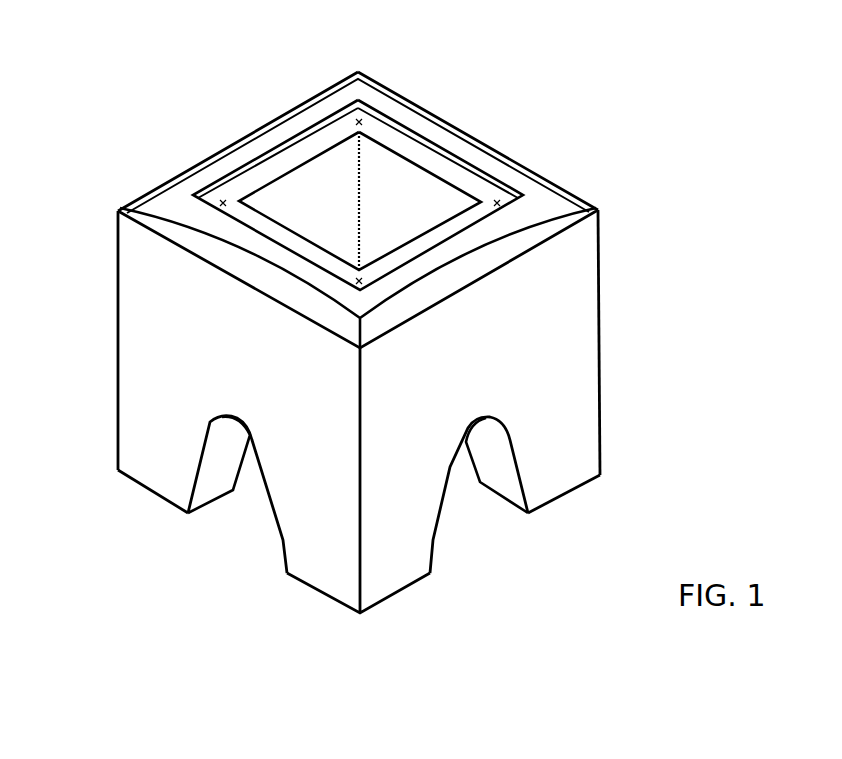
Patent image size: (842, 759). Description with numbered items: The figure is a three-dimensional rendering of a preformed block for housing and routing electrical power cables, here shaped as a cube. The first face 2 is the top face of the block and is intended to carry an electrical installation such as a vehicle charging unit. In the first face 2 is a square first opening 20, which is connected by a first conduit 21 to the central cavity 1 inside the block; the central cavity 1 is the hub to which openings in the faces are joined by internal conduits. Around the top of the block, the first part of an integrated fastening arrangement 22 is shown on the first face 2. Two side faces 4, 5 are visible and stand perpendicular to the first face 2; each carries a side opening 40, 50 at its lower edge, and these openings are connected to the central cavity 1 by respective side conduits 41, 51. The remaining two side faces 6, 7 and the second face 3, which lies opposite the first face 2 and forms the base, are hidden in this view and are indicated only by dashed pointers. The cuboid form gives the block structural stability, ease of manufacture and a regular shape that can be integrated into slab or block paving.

The central cavity 1 is at (345, 232).
The first face 2 is at (363, 93).
The second face 3 is at (377, 578).
The side face 4 is at (566, 400).
The side face 5 is at (142, 340).
The side face 6 is at (158, 292).
The side face 7 is at (556, 305).
The first opening 20 is at (313, 160).
The first conduit 21 is at (383, 378).
The first part of an integrated fastening arrangement 22 is at (492, 203).
The side opening 40 is at (443, 517).
The side conduit 41 is at (453, 476).
The side opening 50 is at (277, 503).
The side conduit 51 is at (268, 476).